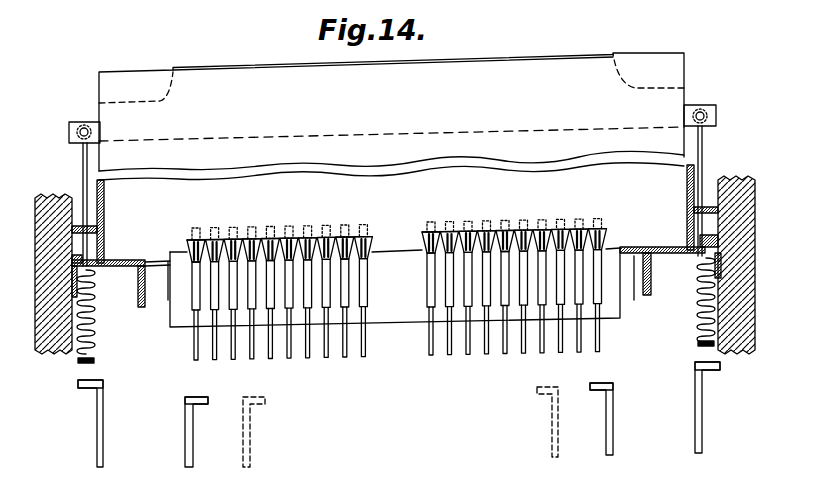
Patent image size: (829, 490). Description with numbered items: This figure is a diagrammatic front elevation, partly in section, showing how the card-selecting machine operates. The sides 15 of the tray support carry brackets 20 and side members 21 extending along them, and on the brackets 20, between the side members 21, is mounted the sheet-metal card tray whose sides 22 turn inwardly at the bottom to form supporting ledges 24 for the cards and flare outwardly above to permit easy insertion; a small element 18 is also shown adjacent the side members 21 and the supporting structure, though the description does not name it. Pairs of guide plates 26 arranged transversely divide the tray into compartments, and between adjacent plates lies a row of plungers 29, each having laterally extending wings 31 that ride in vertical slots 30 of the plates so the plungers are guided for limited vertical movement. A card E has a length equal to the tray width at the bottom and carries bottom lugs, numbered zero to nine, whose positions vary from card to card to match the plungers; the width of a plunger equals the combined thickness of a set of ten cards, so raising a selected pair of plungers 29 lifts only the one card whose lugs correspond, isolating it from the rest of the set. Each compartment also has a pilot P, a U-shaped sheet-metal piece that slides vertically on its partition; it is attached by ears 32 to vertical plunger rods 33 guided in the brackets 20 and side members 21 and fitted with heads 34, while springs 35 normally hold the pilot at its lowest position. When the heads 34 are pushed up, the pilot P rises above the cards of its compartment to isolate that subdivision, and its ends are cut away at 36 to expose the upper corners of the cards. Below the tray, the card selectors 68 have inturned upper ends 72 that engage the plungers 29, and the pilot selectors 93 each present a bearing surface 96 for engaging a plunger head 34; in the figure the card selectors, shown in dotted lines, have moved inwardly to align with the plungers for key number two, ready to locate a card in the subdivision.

The sides of the tray support 15 is at (745, 240).
The nut 18 is at (82, 257).
The brackets 20 is at (396, 277).
The side members 21 is at (104, 198).
The tray sides 22 is at (97, 186).
The supporting ledges 24 is at (160, 268).
The guide plates 26 is at (395, 287).
The plungers 29 is at (214, 346).
The vertical slots 30 is at (292, 227).
The laterally extending wings 31 is at (212, 278).
The ears 32 is at (86, 122).
The vertical plunger rods 33 is at (82, 160).
The plunger heads 34 is at (80, 362).
The springs 35 is at (95, 330).
The cut-away ends of the pilot 36 is at (391, 116).
The selectors 68 is at (185, 440).
The upper ends of the selectors 72 is at (208, 406).
The pilot selectors 93 is at (97, 446).
The bearing surface 96 is at (80, 389).
The pilot P is at (247, 64).
The card E is at (628, 55).